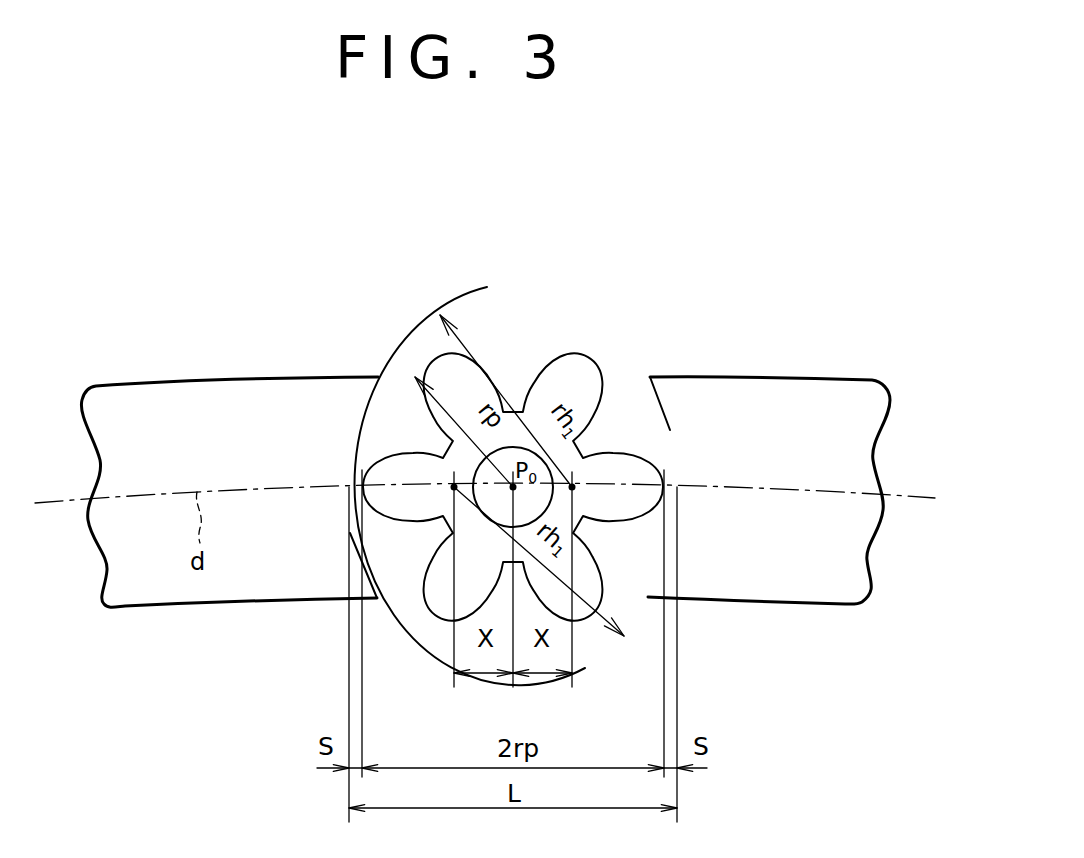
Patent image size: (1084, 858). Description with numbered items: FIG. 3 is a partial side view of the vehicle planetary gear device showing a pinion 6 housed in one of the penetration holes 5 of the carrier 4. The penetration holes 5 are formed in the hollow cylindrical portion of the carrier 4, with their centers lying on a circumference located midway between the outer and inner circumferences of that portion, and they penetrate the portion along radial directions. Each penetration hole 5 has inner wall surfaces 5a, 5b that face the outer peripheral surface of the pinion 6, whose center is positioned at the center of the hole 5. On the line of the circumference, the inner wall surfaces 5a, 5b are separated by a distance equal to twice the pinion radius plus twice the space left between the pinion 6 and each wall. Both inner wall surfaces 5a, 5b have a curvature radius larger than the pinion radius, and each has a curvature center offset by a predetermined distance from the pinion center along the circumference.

The carrier 4 is at (773, 378).
The penetration hole 5 is at (537, 292).
The inner wall surface 5a is at (360, 436).
The inner wall surface 5b is at (668, 430).
The pinion 6 is at (593, 358).